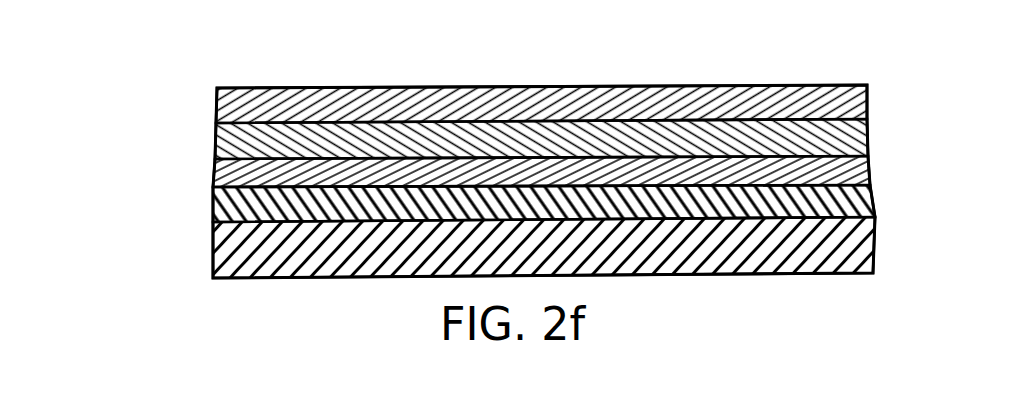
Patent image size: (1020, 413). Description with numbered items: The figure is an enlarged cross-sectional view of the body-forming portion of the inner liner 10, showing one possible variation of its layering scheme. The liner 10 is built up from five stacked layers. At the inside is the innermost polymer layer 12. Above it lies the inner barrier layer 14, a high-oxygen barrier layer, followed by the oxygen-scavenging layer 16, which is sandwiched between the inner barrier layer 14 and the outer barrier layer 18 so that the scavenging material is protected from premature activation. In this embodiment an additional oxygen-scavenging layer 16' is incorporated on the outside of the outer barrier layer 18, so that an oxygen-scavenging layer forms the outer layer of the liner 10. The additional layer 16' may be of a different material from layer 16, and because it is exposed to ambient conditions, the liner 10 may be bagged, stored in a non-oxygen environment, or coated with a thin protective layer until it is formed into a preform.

The inner liner 10 is at (474, 143).
The innermost polymer layer 12 is at (212, 252).
The inner barrier layer 14 is at (213, 210).
The oxygen-scavenging layer 16 is at (492, 161).
The additional oxygen-scavenging layer 16' is at (470, 91).
The outer barrier layer 18 is at (218, 132).